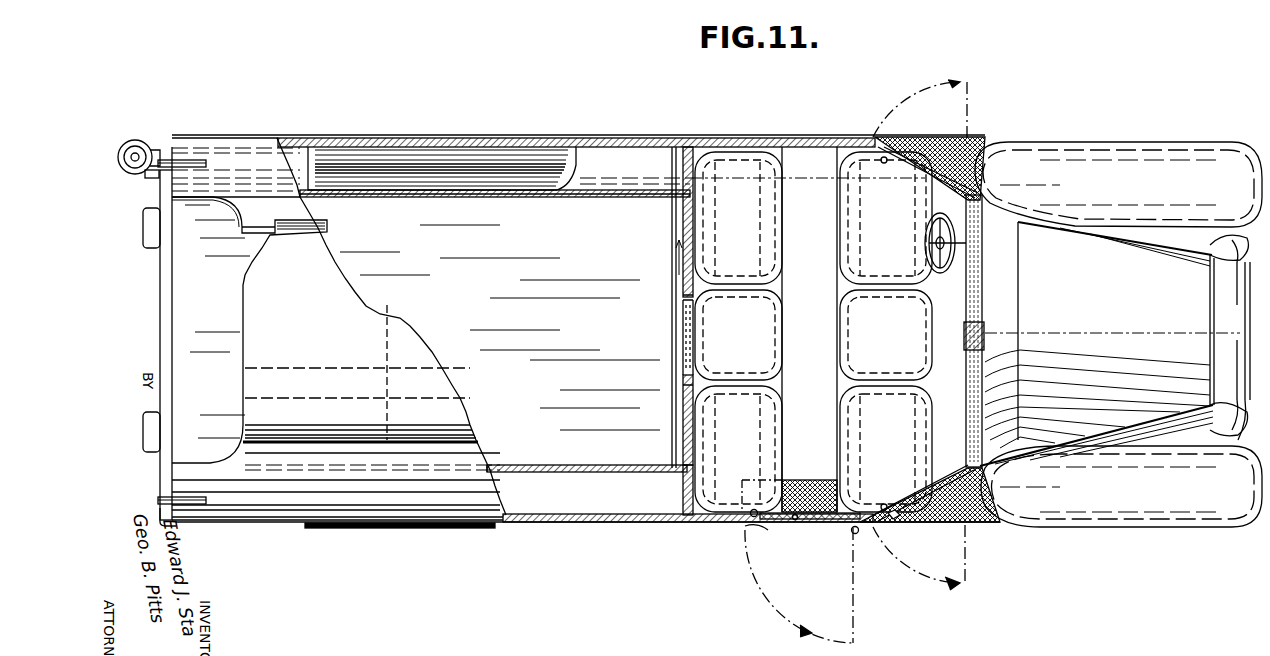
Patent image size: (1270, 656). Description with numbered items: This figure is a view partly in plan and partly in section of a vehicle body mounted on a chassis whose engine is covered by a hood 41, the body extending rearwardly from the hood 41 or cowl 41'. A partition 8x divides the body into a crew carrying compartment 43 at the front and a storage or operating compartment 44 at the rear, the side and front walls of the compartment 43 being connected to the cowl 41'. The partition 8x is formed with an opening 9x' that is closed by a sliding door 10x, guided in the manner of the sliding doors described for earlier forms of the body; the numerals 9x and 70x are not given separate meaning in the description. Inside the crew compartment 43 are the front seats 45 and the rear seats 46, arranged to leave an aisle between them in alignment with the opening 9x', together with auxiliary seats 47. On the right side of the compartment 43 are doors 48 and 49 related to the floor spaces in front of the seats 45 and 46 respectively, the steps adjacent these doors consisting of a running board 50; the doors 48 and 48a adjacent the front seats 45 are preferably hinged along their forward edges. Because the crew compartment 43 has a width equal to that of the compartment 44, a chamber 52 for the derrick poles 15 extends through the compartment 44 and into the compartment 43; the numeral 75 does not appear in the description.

The chamber 52 is at (527, 157).
The rail 75 is at (460, 167).
The derrick poles 15 is at (495, 192).
The storage or operating compartment 44 is at (249, 330).
The opening 9x' is at (663, 249).
The partition upper section 9x is at (663, 249).
The partition middle section 70x is at (685, 360).
The sliding door 10x is at (665, 337).
The partition 8x is at (689, 421).
The rear seats 46 is at (779, 245).
The auxiliary seats 47 is at (845, 345).
The crew carrying compartment 43 is at (809, 329).
The front seats 45 is at (897, 273).
The door 48a is at (927, 185).
The door 48 is at (925, 503).
The door 49 is at (801, 524).
The running board 50 is at (834, 524).
The hood 41 is at (1115, 352).
The cowl 41' is at (1096, 446).